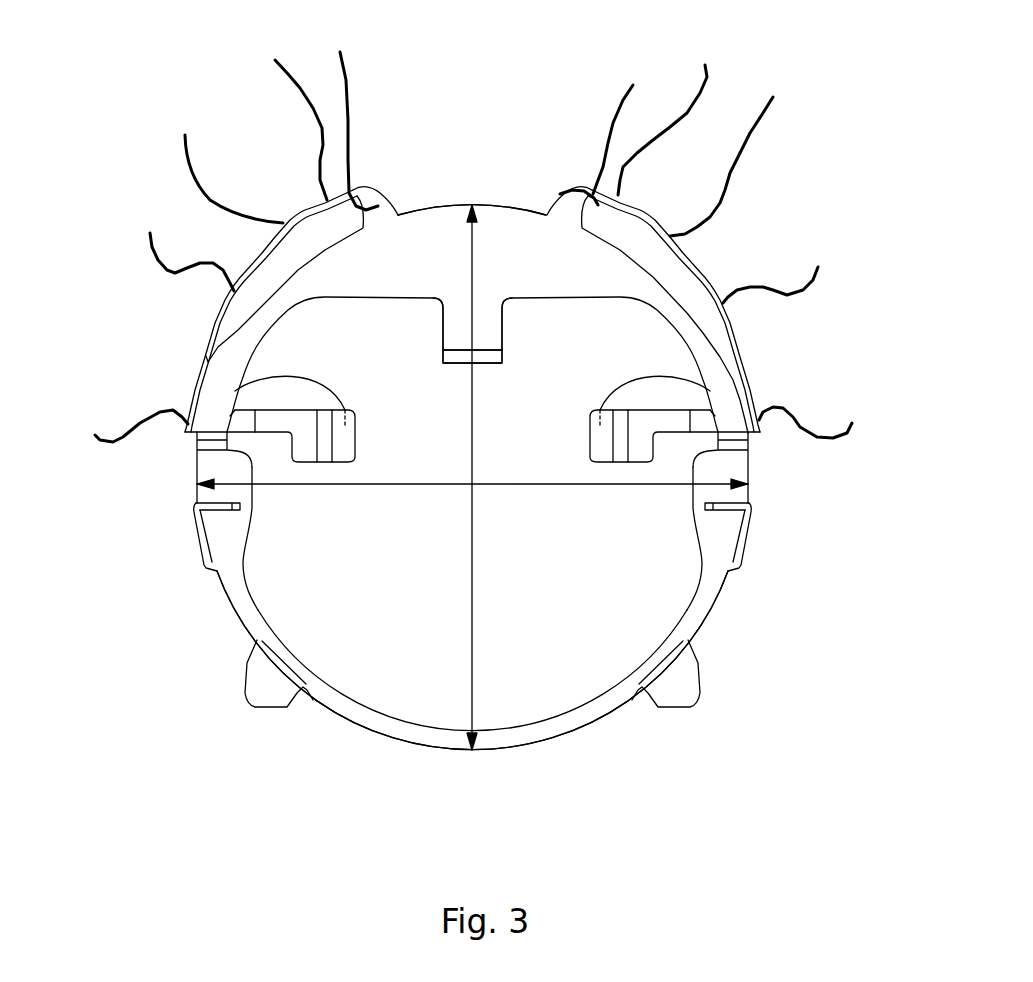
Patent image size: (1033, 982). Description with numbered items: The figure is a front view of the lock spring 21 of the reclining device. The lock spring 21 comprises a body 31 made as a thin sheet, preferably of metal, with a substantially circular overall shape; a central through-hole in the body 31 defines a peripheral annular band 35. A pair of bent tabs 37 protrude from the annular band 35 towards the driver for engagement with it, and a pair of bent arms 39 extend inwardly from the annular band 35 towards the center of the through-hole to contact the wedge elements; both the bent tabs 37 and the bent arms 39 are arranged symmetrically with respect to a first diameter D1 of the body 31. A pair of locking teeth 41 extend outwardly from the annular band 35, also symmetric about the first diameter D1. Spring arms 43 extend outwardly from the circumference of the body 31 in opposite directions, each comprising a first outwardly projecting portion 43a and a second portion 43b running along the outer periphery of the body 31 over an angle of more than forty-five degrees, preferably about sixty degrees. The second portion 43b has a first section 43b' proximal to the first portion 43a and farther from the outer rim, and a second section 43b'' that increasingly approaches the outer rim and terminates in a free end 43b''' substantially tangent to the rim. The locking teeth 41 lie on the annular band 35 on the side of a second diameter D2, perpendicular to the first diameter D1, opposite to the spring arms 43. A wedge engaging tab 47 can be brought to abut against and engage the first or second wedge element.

The lock spring 21 is at (796, 200).
The body 31 is at (500, 206).
The peripheral annular band 35 is at (490, 750).
The bent tabs 37 is at (194, 507).
The bent arms 39 is at (235, 391).
The locking teeth 41 is at (262, 690).
The spring arms 43 is at (320, 203).
The first outwardly projecting portion 43a is at (487, 113).
The second portion 43b is at (485, 145).
The first section 43b' is at (490, 107).
The second section 43b'' is at (504, 247).
The free end 43b''' is at (487, 419).
The wedge engaging tab 47 is at (442, 333).
The first diameter D1 is at (472, 407).
The second diameter D2 is at (587, 485).